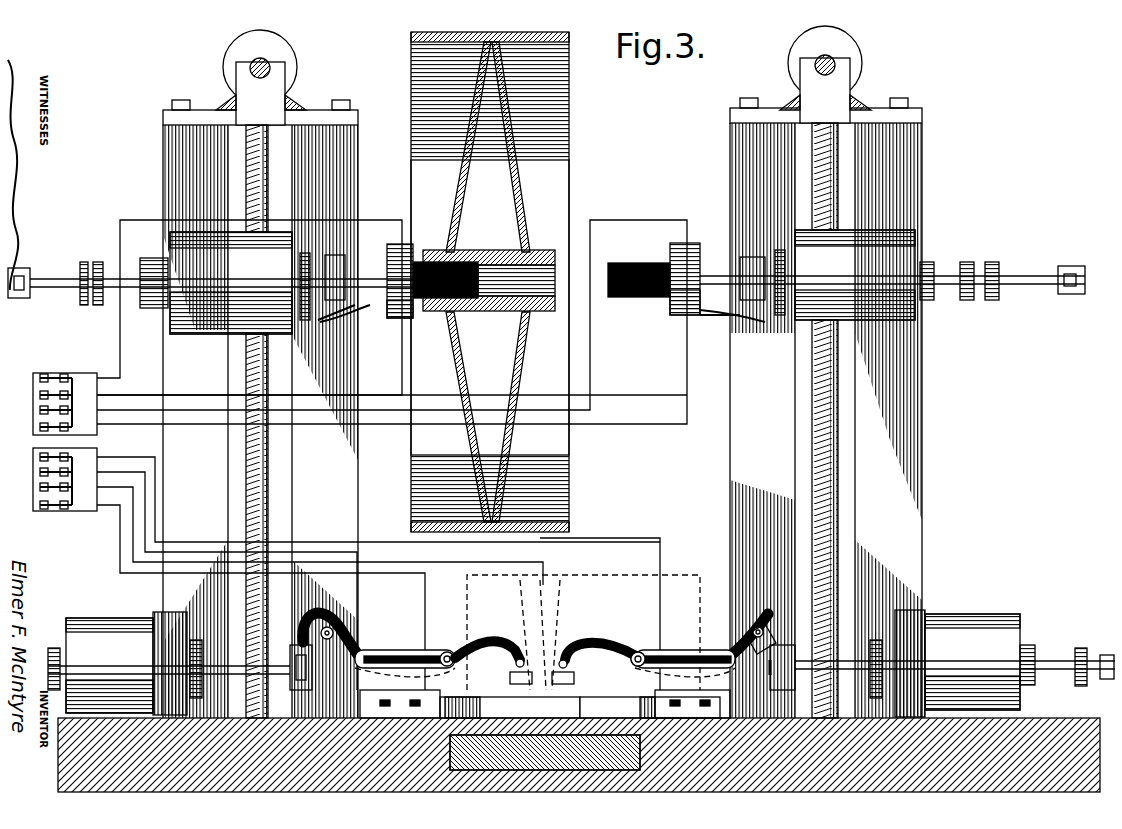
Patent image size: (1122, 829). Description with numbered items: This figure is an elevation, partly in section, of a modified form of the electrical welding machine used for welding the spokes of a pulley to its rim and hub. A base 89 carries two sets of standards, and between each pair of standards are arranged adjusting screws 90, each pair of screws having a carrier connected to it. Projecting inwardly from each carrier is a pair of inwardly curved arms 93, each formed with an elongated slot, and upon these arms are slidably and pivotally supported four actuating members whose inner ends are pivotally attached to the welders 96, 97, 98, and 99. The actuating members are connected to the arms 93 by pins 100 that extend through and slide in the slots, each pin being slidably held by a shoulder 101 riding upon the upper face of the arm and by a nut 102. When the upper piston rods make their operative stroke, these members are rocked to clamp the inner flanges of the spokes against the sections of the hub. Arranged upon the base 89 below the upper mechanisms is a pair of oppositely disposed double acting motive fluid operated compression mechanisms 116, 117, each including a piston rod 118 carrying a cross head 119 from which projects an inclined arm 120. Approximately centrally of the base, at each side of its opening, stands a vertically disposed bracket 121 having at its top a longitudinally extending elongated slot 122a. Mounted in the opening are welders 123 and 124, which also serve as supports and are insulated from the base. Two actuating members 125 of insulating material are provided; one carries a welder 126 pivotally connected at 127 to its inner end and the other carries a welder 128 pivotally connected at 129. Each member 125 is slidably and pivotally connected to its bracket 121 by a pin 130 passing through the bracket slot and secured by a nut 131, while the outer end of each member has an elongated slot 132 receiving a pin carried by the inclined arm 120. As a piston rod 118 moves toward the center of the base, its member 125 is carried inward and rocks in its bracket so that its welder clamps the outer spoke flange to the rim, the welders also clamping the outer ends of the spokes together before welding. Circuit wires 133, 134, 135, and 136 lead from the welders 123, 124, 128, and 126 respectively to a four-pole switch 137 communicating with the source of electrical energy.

The base 89 is at (58, 768).
The adjusting screws 90 is at (840, 172).
The inwardly curved arms 93 is at (705, 316).
The welder 96 is at (408, 246).
The welder 97 is at (392, 318).
The welder 98 is at (680, 316).
The welder 99 is at (692, 244).
The pins 100 is at (745, 300).
The shoulder 101 is at (368, 318).
The nut 102 is at (355, 303).
The double acting motive fluid operated compression mechanism 116 is at (955, 663).
The double acting motive fluid operated compression mechanism 117 is at (169, 663).
The piston rod 118 is at (300, 645).
The cross head 119 is at (322, 615).
The inclined arm 120 is at (334, 632).
The bracket 121 is at (398, 650).
The elongated slot 122a is at (445, 652).
The welder 123 is at (510, 707).
The welder 124 is at (634, 707).
The actuating members 125 is at (545, 648).
The welder 126 is at (578, 645).
The pivot connection 127 is at (574, 672).
The welder 128 is at (510, 680).
The pivot connection 129 is at (515, 664).
The pin 130 is at (640, 652).
The nut 131 is at (644, 654).
The elongated slot 132 is at (752, 628).
The circuit wire 133 is at (130, 545).
The circuit wire 134 is at (648, 540).
The circuit wire 135 is at (140, 552).
The circuit wire 136 is at (128, 563).
The four-pole switch 137 is at (60, 511).